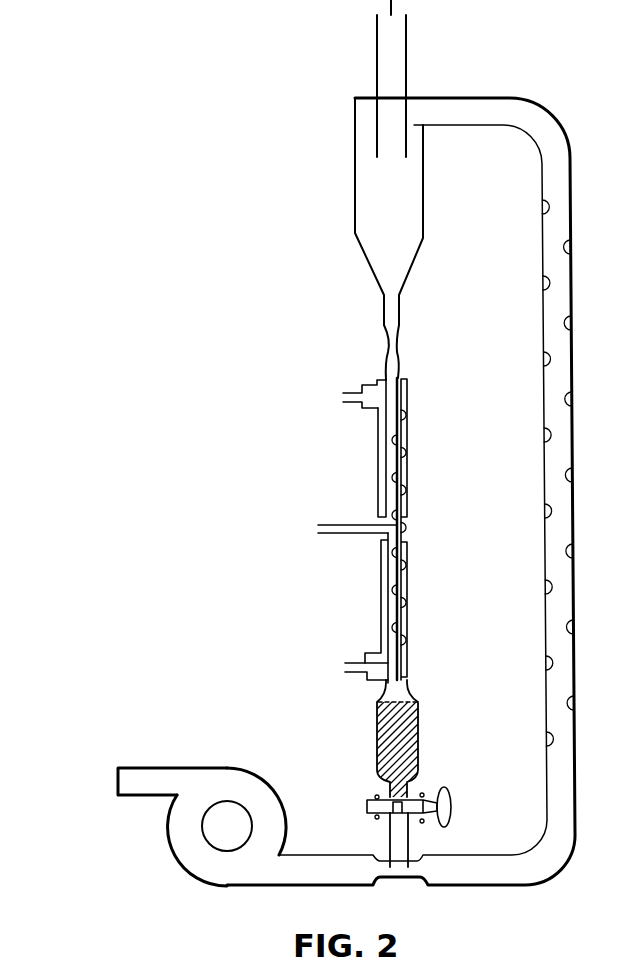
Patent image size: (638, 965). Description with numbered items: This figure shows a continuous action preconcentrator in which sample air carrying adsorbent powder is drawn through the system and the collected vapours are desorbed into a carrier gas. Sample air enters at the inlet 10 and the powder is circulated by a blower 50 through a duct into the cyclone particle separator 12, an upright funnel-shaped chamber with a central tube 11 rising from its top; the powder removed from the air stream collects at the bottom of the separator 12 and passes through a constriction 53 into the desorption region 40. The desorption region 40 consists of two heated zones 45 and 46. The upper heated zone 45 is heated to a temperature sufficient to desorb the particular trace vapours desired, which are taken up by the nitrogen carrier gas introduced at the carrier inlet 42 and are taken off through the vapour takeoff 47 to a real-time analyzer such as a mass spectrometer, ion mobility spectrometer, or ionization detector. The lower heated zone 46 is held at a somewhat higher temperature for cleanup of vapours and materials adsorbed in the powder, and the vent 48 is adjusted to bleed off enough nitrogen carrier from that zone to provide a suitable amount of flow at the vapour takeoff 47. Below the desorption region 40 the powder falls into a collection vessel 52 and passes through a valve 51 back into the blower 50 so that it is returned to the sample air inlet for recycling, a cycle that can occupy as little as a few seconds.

The inlet 10 is at (112, 781).
The outlet tube 11 is at (406, 47).
The cyclone particle separator 12 is at (357, 200).
The desorption region 40 is at (415, 413).
The carrier inlet 42 is at (313, 527).
The heated zone 45 is at (378, 456).
The heated zone 46 is at (382, 587).
The vapour takeoff 47 is at (340, 397).
The vent 48 is at (340, 666).
The pump 50 is at (210, 887).
The valve 51 is at (417, 818).
The filter trap 52 is at (420, 727).
The constriction 53 is at (398, 345).